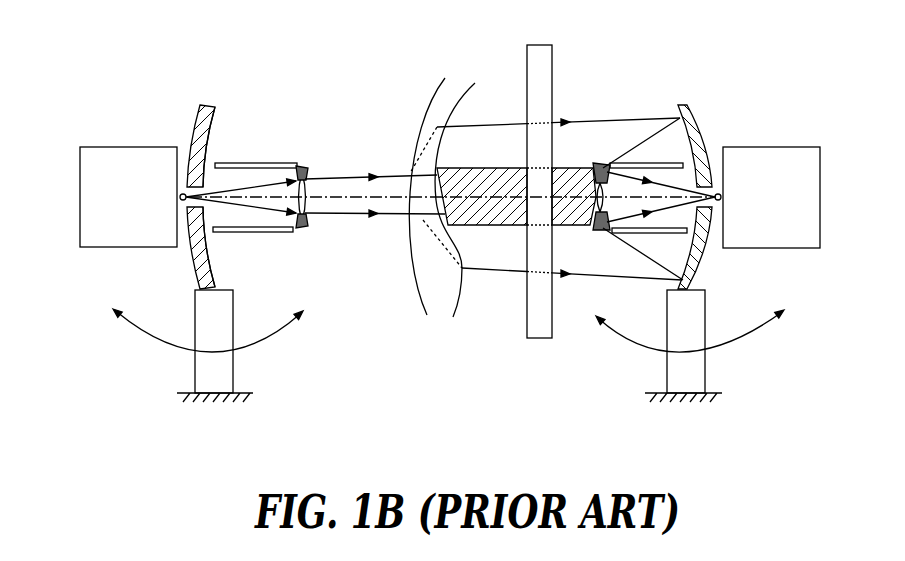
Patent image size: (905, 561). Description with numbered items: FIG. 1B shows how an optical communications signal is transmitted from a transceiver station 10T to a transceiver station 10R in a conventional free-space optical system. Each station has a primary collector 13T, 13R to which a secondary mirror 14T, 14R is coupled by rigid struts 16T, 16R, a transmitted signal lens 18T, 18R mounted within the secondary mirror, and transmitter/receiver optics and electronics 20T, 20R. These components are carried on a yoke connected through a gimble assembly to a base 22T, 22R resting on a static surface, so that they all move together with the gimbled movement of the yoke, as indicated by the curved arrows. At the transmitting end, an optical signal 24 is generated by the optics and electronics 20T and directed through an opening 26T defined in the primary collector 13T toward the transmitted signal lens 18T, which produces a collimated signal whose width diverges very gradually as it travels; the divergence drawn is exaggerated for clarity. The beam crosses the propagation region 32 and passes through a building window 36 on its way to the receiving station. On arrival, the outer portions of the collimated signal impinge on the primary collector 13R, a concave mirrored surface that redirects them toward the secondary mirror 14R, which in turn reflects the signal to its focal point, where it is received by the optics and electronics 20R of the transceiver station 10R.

The transceiver station 10T is at (298, 382).
The transceiver station 10R is at (597, 402).
The primary collector 13T is at (220, 107).
The primary collector 13R is at (697, 123).
The secondary mirror 14T is at (318, 170).
The secondary mirror 14R is at (595, 165).
The rigid struts 16T is at (253, 163).
The rigid struts 16R is at (615, 166).
The transmitted signal lens 18T is at (323, 213).
The transmitted signal lens 18R is at (582, 228).
The transmitter/receiver optics and electronics 20T is at (80, 197).
The transmitter/receiver optics and electronics 20R is at (820, 197).
The base 22T is at (210, 368).
The base 22R is at (688, 373).
The optical signal 24 is at (247, 205).
The opening 26T is at (217, 187).
The atmospheric propagation path 32 is at (497, 170).
The building window 36 is at (538, 336).